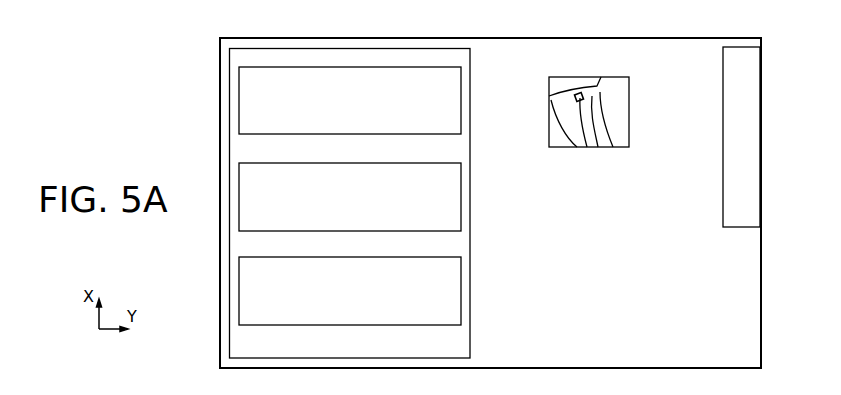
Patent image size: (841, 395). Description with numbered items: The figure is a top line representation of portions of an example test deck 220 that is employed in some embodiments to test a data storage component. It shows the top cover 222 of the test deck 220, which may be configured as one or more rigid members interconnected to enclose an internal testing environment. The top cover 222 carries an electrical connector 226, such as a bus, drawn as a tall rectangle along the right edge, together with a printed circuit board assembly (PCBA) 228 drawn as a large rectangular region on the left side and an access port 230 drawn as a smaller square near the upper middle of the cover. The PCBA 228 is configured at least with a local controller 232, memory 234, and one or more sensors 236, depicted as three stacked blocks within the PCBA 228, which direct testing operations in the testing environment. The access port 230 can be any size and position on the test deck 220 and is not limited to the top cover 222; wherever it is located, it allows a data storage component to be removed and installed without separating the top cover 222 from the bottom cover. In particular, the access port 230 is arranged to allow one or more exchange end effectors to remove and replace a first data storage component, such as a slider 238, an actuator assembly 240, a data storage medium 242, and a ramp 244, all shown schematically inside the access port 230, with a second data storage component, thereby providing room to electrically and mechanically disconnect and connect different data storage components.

The test deck 220 is at (187, 61).
The top cover 222 is at (752, 363).
The electrical connector 226 is at (725, 47).
The printed circuit board assembly (PCBA) 228 is at (365, 354).
The access port 230 is at (630, 141).
The local controller 232 is at (365, 109).
The memory 234 is at (365, 206).
The sensors 236 is at (365, 300).
The slider 238 is at (591, 99).
The actuator assembly 240 is at (593, 151).
The data storage medium 242 is at (549, 138).
The ramp 244 is at (579, 76).